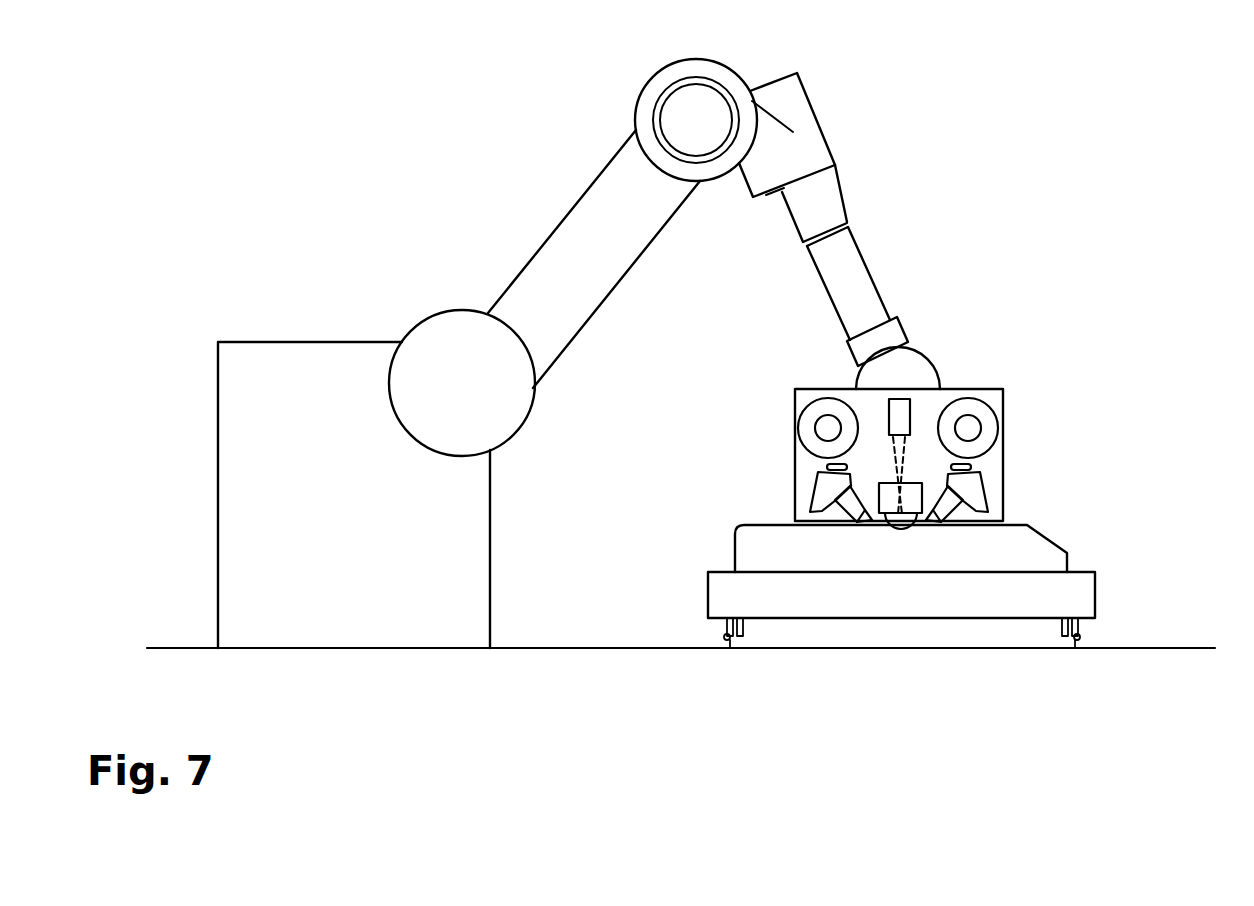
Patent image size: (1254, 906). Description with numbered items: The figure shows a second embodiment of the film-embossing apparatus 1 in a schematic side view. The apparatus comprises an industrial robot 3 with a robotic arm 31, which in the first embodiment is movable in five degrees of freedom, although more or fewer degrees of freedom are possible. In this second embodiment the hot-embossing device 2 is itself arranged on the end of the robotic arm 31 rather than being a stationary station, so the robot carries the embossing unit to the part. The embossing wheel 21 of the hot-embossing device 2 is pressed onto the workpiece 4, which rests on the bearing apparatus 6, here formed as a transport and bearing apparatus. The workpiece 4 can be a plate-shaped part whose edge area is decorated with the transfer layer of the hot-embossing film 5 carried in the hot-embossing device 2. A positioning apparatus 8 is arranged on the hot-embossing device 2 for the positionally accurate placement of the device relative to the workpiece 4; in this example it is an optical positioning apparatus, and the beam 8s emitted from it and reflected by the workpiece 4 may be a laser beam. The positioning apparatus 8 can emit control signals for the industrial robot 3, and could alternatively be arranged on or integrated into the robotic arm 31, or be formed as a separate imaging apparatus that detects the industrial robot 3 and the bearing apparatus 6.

The film-embossing apparatus 1 is at (1128, 104).
The hot-embossing device 2 is at (985, 365).
The industrial robot 3 is at (423, 208).
The robotic arm 31 is at (842, 208).
The workpiece 4 is at (760, 533).
The hot-embossing film 5 is at (955, 530).
The bearing apparatus 6 is at (682, 580).
The positioning apparatus 8 is at (897, 417).
The beam 8s is at (890, 451).
The embossing wheel 21 is at (905, 527).